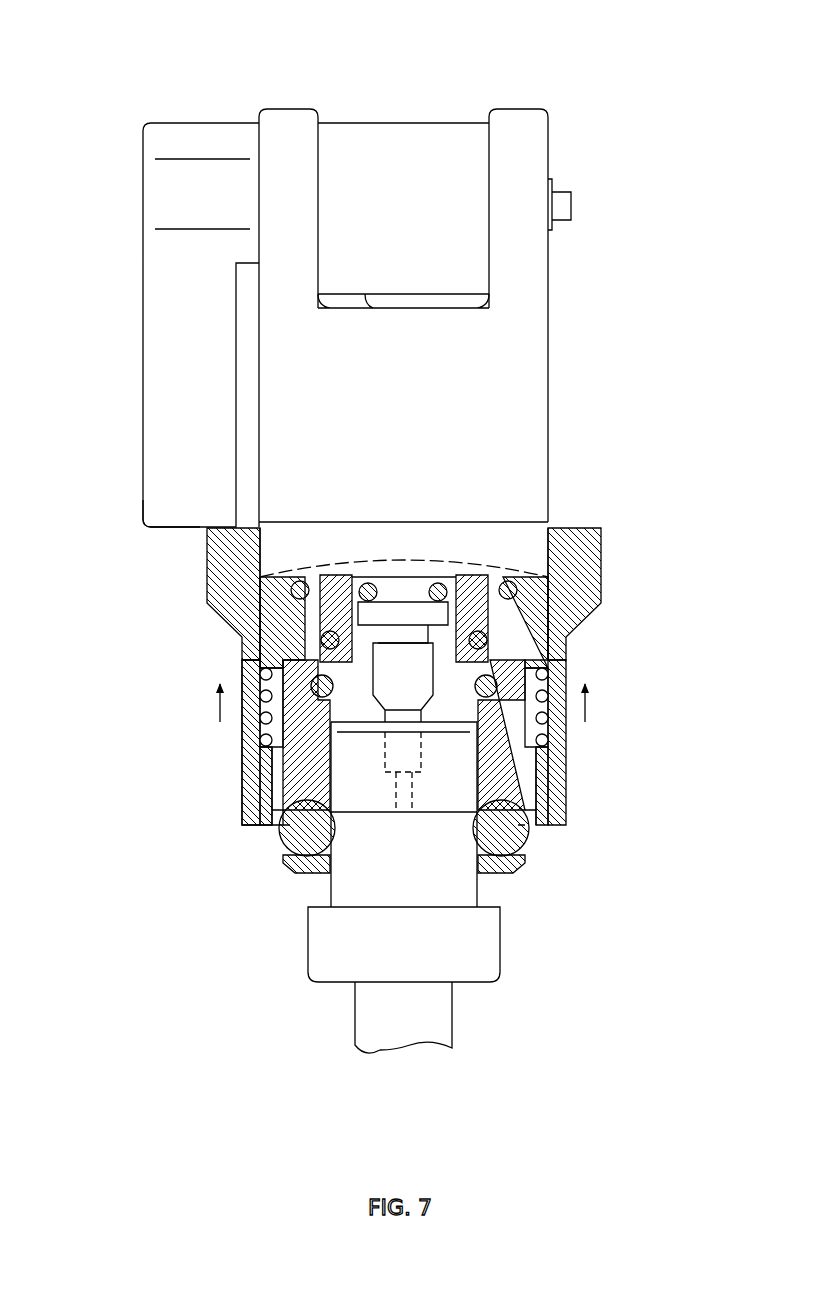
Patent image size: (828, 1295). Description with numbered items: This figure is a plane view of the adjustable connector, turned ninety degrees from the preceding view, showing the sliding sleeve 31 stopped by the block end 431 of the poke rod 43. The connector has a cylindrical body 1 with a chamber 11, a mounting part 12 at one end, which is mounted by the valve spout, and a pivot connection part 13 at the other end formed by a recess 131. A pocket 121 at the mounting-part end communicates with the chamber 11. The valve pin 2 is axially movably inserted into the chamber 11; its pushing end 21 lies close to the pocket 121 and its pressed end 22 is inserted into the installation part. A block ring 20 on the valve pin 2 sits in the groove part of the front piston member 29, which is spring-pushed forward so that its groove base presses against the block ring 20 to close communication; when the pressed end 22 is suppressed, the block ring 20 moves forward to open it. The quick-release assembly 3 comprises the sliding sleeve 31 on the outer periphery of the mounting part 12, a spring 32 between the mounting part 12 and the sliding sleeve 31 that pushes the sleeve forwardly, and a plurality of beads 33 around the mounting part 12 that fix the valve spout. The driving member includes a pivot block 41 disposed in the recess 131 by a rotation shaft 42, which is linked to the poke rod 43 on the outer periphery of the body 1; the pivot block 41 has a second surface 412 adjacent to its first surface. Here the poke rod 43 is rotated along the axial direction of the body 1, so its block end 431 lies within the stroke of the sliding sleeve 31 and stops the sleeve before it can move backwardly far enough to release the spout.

The body 1 is at (540, 445).
The valve pin 2 is at (380, 703).
The quick-release assembly 3 is at (205, 797).
The chamber 11 is at (540, 705).
The mounting part 12 is at (512, 767).
The pivot connection part 13 is at (537, 138).
The block ring 20 is at (358, 576).
The pushing end 21 is at (416, 774).
The pressed end 22 is at (424, 294).
The front piston member 29 is at (503, 578).
The sliding sleeve 31 is at (252, 742).
The spring 32 is at (258, 620).
The beads 33 is at (290, 830).
The pivot block 41 is at (345, 122).
The rotation shaft 42 is at (574, 205).
The poke rod 43 is at (157, 206).
The pocket 121 is at (485, 855).
The recess 131 is at (463, 104).
The second surface 412 is at (373, 296).
The block end 431 is at (177, 530).